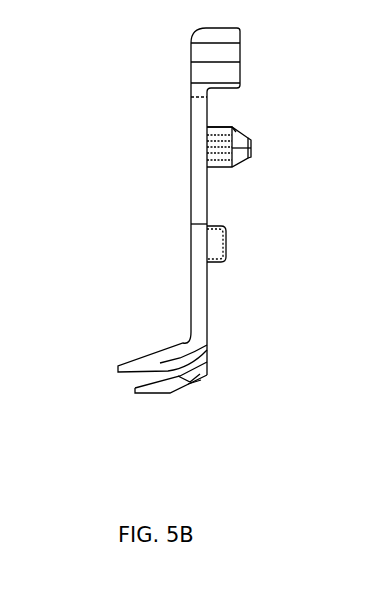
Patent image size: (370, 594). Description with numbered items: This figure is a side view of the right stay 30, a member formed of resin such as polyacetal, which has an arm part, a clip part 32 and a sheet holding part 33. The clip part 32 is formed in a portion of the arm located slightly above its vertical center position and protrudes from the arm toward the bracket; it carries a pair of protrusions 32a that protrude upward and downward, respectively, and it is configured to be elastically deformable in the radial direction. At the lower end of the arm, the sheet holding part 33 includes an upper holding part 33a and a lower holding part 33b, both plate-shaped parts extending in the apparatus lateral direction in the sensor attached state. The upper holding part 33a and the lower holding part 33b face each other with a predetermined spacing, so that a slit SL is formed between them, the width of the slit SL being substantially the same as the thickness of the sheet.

The right stay 30 is at (121, 127).
The clip part 32 is at (252, 150).
The protrusions 32a is at (213, 128).
The sheet holding part 33 is at (54, 368).
The upper holding part 33a is at (118, 369).
The lower holding part 33b is at (135, 392).
The slit SL is at (192, 377).